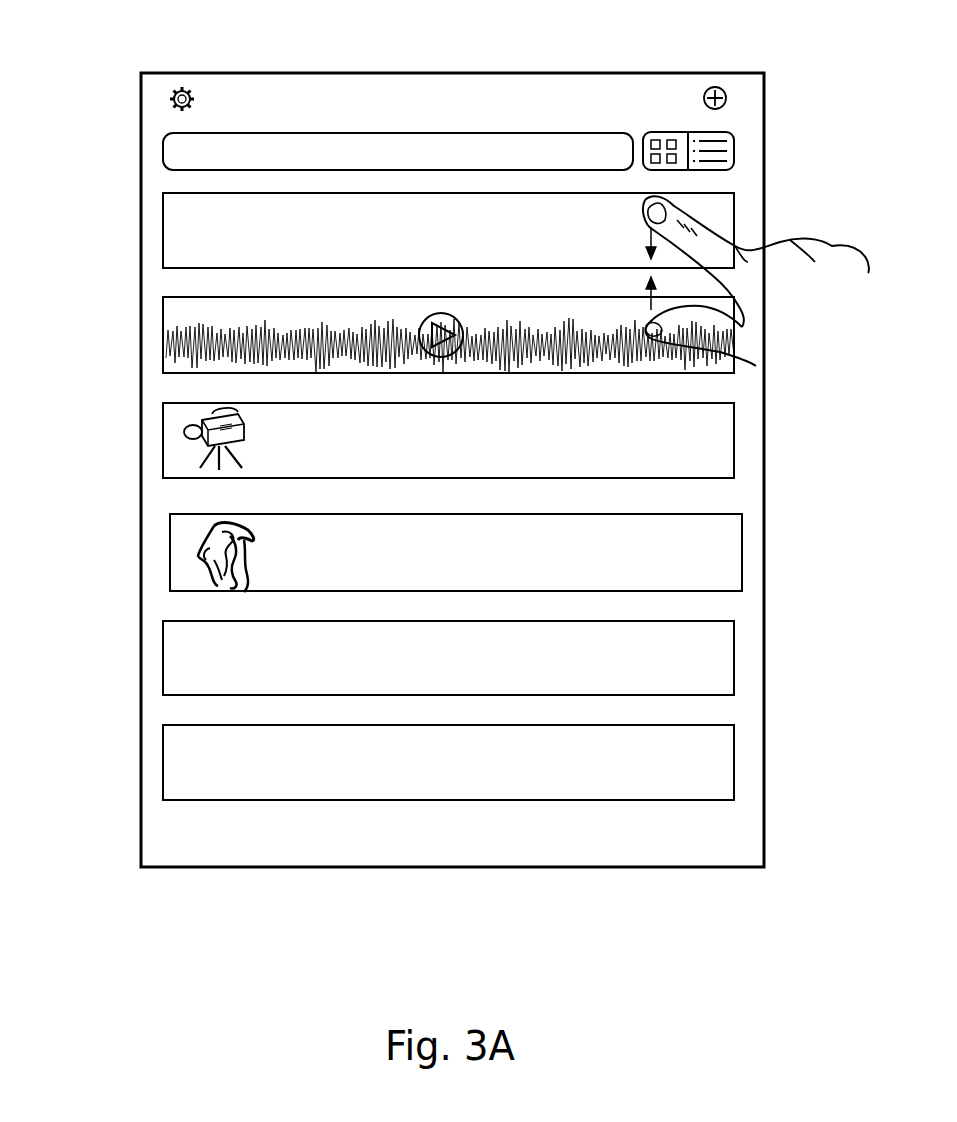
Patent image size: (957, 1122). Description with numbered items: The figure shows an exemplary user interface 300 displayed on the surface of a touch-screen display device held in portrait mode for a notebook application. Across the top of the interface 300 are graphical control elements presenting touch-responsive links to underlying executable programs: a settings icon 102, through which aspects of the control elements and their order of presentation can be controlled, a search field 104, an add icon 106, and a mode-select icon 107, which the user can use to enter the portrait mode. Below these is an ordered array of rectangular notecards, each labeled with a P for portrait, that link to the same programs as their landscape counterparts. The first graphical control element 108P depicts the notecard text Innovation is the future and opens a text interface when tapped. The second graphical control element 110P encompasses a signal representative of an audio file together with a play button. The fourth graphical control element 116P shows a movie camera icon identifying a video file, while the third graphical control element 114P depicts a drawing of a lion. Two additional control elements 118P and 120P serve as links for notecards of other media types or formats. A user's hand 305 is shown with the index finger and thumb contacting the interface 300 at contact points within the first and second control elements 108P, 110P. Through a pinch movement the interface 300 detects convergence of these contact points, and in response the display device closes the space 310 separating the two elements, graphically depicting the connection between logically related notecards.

The user interface 300 is at (102, 69).
The settings icon 102 is at (193, 95).
The search field 104 is at (458, 164).
The add icon 106 is at (702, 99).
The mode-select icon 107 is at (664, 130).
The first graphical control element 108P is at (460, 242).
The second graphical control element 110P is at (570, 326).
The fourth graphical control element 116P is at (500, 432).
The third graphical control element 114P is at (520, 544).
The additional control element 118P is at (497, 649).
The additional control element 120P is at (497, 754).
The user's hand 305 is at (818, 240).
The space 310 is at (174, 284).